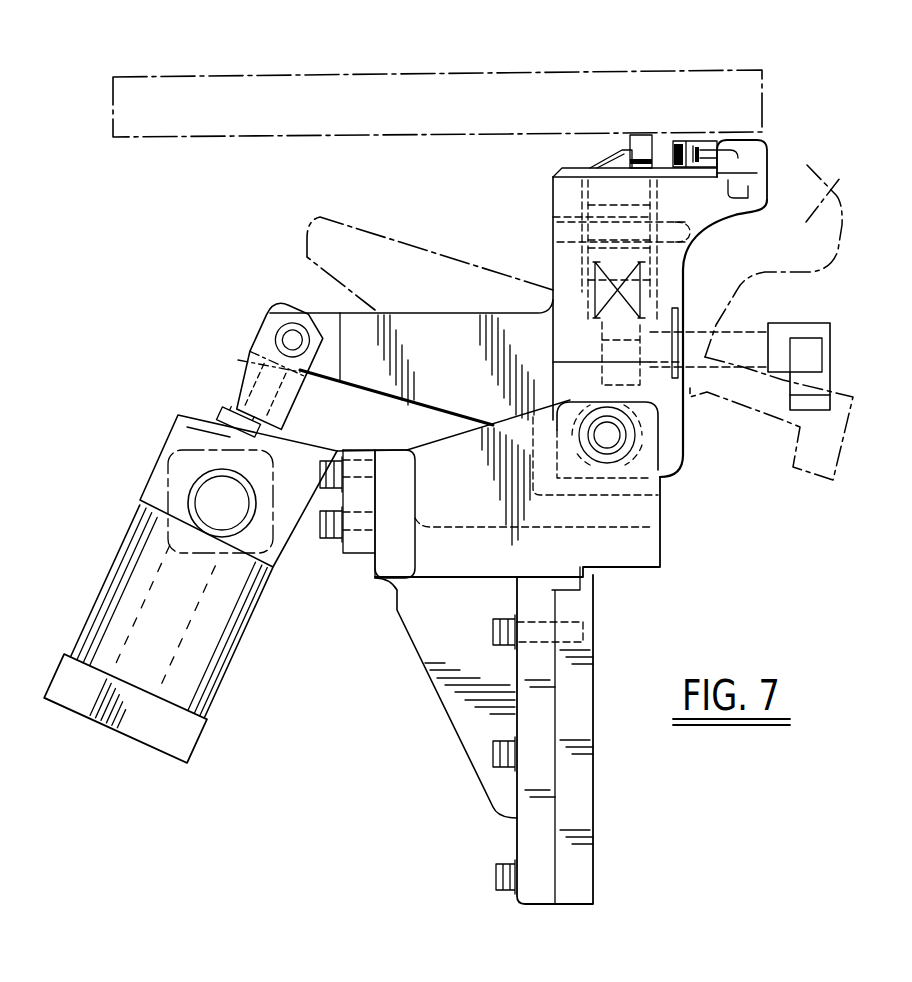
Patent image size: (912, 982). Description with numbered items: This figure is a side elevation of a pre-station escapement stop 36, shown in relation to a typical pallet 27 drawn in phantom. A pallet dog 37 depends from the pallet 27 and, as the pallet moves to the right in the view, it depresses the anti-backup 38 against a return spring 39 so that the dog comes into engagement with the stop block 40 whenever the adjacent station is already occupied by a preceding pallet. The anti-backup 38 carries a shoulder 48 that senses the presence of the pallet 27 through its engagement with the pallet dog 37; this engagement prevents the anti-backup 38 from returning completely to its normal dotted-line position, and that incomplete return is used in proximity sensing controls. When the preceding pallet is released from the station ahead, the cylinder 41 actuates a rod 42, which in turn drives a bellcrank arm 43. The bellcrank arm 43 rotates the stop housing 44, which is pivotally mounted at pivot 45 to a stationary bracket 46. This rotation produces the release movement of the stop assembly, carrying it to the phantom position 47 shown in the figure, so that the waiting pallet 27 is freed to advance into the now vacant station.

The pallet 27 is at (440, 70).
The pre-station escapement stop 36 is at (840, 121).
The pallet dog 37 is at (652, 140).
The anti-backup 38 is at (628, 143).
The return spring 39 is at (640, 300).
The stop block 40 is at (763, 121).
The cylinder 41 is at (237, 641).
The rod 42 is at (260, 363).
The bellcrank arm 43 is at (403, 393).
The stop housing 44 is at (723, 210).
The pivot 45 is at (617, 438).
The stationary bracket 46 is at (652, 515).
The phantom position 47 is at (434, 240).
The shoulder 48 is at (633, 173).